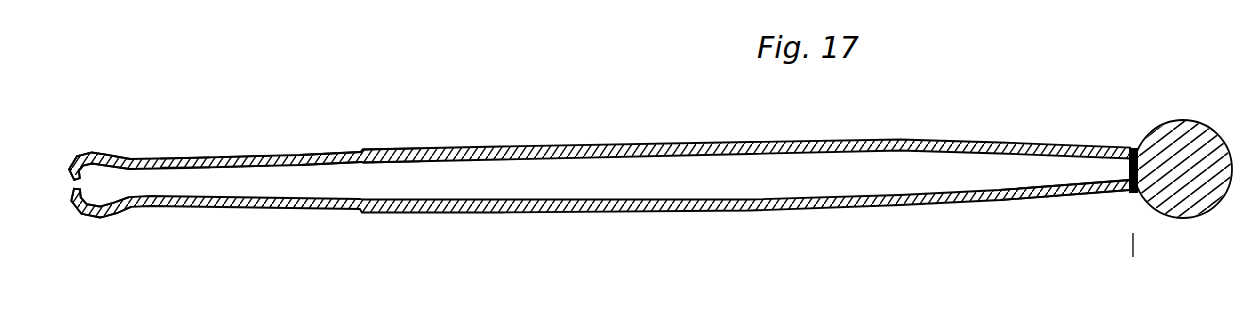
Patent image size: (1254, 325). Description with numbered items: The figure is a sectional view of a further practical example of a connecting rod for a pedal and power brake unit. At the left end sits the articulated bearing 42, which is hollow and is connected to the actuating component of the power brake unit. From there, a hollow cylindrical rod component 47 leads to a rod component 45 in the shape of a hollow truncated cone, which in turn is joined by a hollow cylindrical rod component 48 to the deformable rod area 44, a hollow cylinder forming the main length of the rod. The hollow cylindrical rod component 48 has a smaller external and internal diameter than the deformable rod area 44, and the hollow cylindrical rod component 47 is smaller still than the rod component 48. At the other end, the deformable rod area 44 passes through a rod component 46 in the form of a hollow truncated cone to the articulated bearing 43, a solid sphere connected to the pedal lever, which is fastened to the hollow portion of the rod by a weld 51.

The articulated bearing 42 is at (103, 156).
The articulated bearing 43 is at (1145, 132).
The deformable rod area 44 is at (718, 188).
The rod component in the shape of a hollow truncated cone 45 is at (240, 160).
The rod component in the form of a hollow truncated cone 46 is at (1062, 177).
The hollow cylindrical rod component 47 is at (180, 160).
The hollow cylindrical rod component 48 is at (330, 152).
The weld 51 is at (1130, 150).